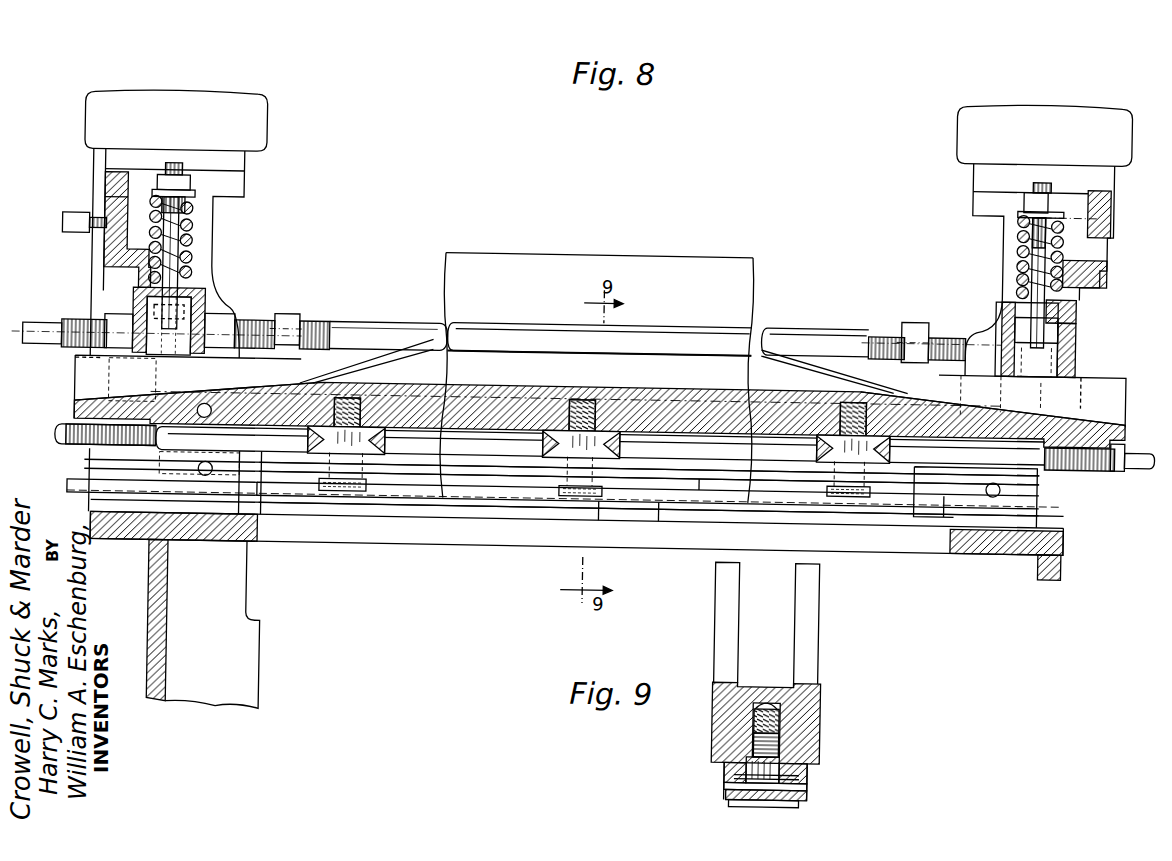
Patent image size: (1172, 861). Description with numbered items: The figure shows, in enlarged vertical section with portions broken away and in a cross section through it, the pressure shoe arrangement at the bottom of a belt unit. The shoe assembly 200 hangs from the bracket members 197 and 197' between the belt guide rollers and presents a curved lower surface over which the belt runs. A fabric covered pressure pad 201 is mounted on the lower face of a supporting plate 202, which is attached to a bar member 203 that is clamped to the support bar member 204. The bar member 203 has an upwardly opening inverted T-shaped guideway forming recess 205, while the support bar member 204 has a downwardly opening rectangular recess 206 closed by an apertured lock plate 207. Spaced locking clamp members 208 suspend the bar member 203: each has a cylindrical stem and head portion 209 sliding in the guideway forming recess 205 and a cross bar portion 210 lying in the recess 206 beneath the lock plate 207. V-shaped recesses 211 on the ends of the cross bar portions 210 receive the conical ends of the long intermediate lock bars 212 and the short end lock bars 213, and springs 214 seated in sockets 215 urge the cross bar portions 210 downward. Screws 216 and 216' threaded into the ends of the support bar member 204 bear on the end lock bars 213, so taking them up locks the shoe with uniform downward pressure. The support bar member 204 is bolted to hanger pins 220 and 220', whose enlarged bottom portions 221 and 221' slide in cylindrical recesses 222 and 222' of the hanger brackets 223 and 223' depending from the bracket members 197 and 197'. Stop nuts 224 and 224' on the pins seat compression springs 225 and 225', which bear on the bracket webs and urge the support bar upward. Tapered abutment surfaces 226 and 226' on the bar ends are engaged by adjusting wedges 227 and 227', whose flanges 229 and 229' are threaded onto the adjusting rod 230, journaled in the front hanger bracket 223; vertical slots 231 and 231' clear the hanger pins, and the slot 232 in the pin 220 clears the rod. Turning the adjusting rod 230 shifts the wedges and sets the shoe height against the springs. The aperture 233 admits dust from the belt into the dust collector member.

In FIG. 8, the bracket member 197 is at (196, 120).
In FIG. 8, the bracket member 197' is at (1016, 135).
In FIG. 8, the shoe assembly 200 is at (505, 508).
In FIG. 8, the pressure pad 201 is at (645, 512).
In FIG. 9, the pressure pad 201 is at (800, 801).
In FIG. 8, the supporting plate 202 is at (662, 509).
In FIG. 9, the supporting plate 202 is at (813, 784).
In FIG. 8, the bar member 203 is at (702, 488).
In FIG. 9, the bar member 203 is at (730, 770).
In FIG. 8, the support bar member 204 is at (809, 389).
In FIG. 8, the guideway forming recess 205 is at (795, 501).
In FIG. 9, the guideway forming recess 205 is at (813, 777).
In FIG. 8, the recess 206 is at (651, 439).
In FIG. 9, the recess 206 is at (717, 720).
In FIG. 8, the lock plate 207 is at (677, 465).
In FIG. 9, the lock plate 207 is at (810, 770).
In FIG. 8, the locking clamp member 208 is at (343, 495).
In FIG. 9, the locking clamp member 208 is at (822, 757).
In FIG. 8, the stem and head portion 209 is at (556, 513).
In FIG. 9, the stem and head portion 209 is at (735, 786).
In FIG. 8, the cross bar portion 210 is at (600, 516).
In FIG. 9, the cross bar portion 210 is at (760, 744).
In FIG. 8, the V-shaped recess 211 is at (545, 455).
In FIG. 9, the V-shaped recess 211 is at (785, 738).
In FIG. 8, the intermediate lock bar 212 is at (460, 434).
In FIG. 8, the end lock bar 213 is at (259, 457).
In FIG. 8, the spring 214 is at (610, 452).
In FIG. 9, the spring 214 is at (780, 700).
In FIG. 8, the socket 215 is at (575, 410).
In FIG. 9, the socket 215 is at (785, 712).
In FIG. 8, the screw 216 is at (92, 446).
In FIG. 8, the screw 216' is at (1099, 469).
In FIG. 8, the hanger pin 220 is at (214, 264).
In FIG. 8, the hanger pin 220' is at (994, 282).
In FIG. 8, the bottom portion 221 is at (192, 299).
In FIG. 8, the bottom portion 221' is at (1086, 331).
In FIG. 8, the cylindrical recess 222 is at (204, 313).
In FIG. 8, the cylindrical recess 222' is at (1001, 331).
In FIG. 8, the hanger bracket 223 is at (178, 253).
In FIG. 8, the hanger bracket 223' is at (1012, 270).
In FIG. 8, the stop nut 224 is at (223, 184).
In FIG. 8, the stop nut 224' is at (990, 196).
In FIG. 8, the compression spring 225 is at (218, 240).
In FIG. 8, the compression spring 225' is at (1004, 256).
In FIG. 8, the tapered abutment surface 226 is at (176, 394).
In FIG. 8, the tapered abutment surface 226' is at (1013, 397).
In FIG. 8, the adjusting wedge 227 is at (165, 388).
In FIG. 8, the adjusting wedge 227' is at (1043, 385).
In FIG. 8, the flange 229 is at (289, 308).
In FIG. 8, the flange 229' is at (908, 325).
In FIG. 8, the adjusting rod 230 is at (369, 326).
In FIG. 8, the vertical slot 231 is at (68, 355).
In FIG. 8, the vertical slot 231' is at (1111, 369).
In FIG. 8, the slot 232 is at (132, 312).
In FIG. 8, the aperture 233 is at (150, 524).